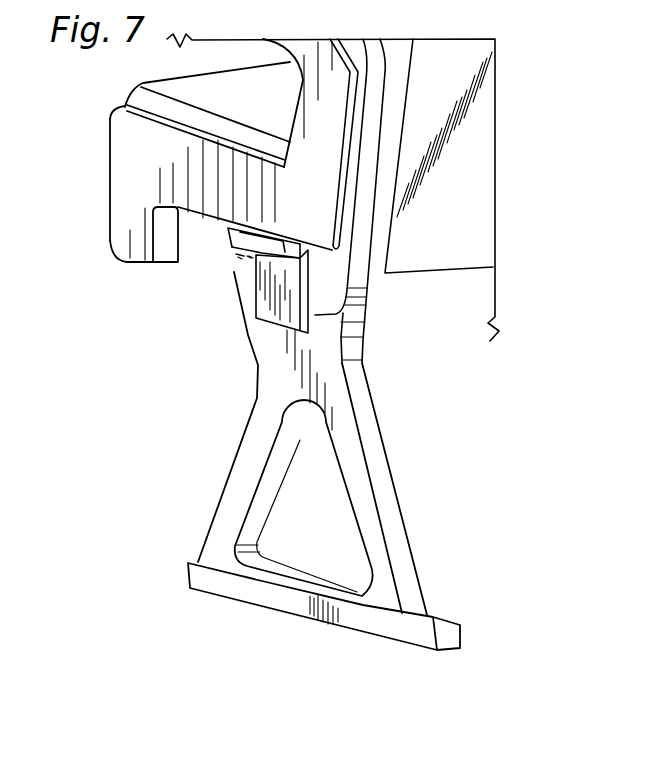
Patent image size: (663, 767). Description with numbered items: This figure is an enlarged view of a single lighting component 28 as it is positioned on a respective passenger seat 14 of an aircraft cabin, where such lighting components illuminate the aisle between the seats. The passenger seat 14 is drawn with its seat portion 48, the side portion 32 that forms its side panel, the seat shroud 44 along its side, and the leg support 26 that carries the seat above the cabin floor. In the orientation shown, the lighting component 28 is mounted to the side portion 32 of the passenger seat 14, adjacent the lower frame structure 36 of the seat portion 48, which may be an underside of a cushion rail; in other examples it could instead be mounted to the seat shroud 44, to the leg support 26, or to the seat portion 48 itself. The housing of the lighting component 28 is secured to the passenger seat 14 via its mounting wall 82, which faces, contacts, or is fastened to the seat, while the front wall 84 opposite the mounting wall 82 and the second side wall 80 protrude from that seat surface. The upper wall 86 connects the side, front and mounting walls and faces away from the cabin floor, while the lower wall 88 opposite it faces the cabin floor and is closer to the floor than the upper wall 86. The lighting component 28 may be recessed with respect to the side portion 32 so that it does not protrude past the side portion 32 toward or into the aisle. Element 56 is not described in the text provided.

The passenger seat 14 is at (142, 161).
The leg support 26 is at (384, 481).
The lighting component 28 is at (236, 259).
The side portion 32 is at (322, 194).
The lower frame structure 36 is at (205, 215).
The seat shroud 44 is at (122, 215).
The seat portion 48 is at (269, 102).
The aperture 56 is at (245, 260).
The second side wall 80 is at (268, 250).
The mounting wall 82 is at (300, 247).
The front wall 84 is at (240, 256).
The upper wall 86 is at (262, 237).
The lower wall 88 is at (251, 262).